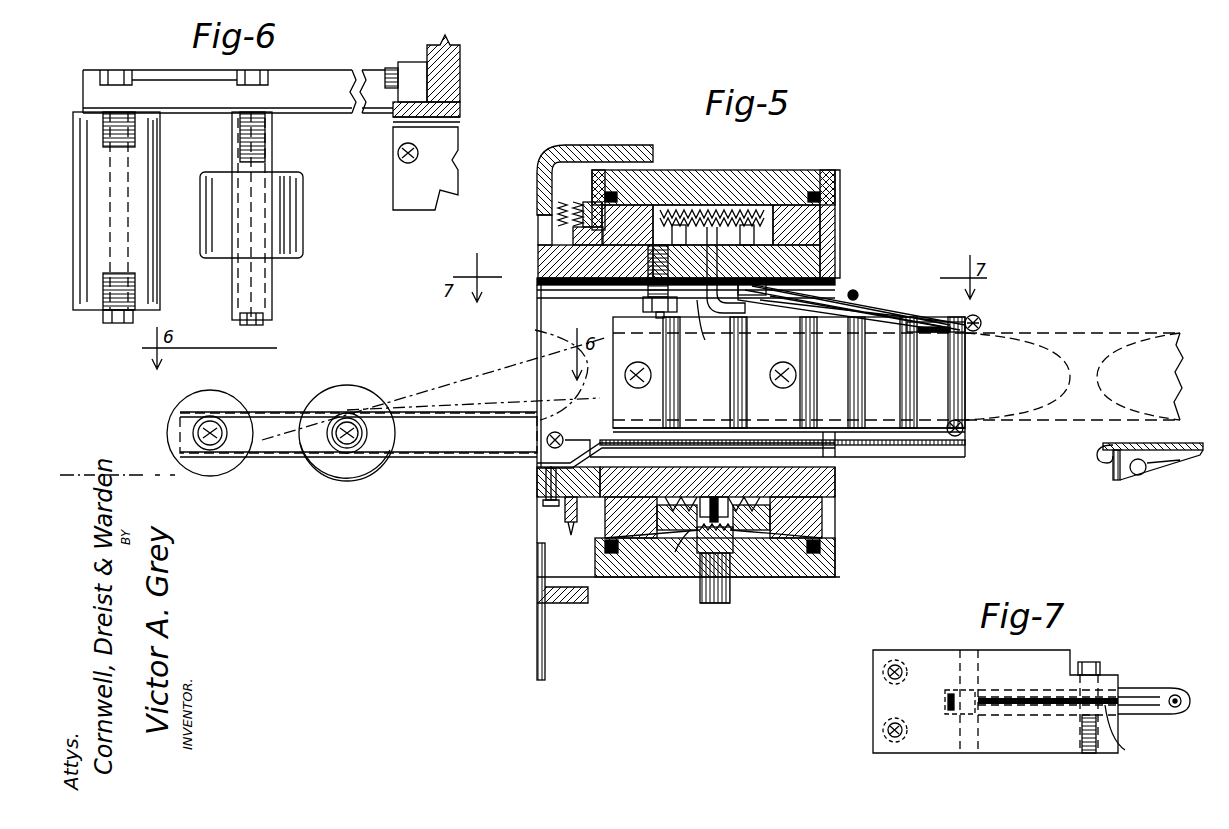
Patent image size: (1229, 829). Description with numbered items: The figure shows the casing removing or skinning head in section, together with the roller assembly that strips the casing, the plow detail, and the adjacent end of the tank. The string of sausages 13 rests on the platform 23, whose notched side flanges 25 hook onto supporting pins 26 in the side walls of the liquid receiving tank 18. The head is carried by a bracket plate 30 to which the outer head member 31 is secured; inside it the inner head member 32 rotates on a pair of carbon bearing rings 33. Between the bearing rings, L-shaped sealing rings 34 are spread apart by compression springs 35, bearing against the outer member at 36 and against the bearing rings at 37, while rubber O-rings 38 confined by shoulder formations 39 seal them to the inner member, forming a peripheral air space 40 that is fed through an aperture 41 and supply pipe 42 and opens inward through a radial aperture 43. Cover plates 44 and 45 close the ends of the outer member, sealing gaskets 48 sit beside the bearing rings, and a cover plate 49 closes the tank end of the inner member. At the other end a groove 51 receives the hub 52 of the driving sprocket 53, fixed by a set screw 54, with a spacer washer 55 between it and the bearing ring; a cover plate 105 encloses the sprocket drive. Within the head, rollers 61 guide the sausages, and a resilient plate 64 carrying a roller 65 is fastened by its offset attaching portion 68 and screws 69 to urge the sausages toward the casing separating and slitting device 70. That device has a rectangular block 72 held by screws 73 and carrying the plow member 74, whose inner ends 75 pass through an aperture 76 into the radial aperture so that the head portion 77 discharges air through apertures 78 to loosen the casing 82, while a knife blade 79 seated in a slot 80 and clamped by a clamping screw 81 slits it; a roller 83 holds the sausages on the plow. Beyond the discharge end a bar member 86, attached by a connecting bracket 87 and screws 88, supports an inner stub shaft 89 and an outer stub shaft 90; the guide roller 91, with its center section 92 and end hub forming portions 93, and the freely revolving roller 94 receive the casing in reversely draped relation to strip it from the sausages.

In FIG. 5, the string of sausages 13 is at (1100, 355).
In FIG. 5, the liquid receiving tank 18 is at (1115, 475).
In FIG. 5, the platform 23 is at (1170, 445).
In FIG. 5, the notched side flanges 25 is at (1162, 470).
In FIG. 5, the supporting pins 26 is at (1134, 478).
In FIG. 5, the bracket plate 30 is at (838, 572).
In FIG. 5, the outer head member 31 is at (738, 172).
In FIG. 5, the inner head member 32 is at (838, 495).
In FIG. 5, the carbon bearing rings 33 is at (838, 516).
In FIG. 5, the sealing rings 34 is at (660, 548).
In FIG. 5, the compression springs 35 is at (690, 545).
In FIG. 5, the engagement point of sealing ring with outer head member 36 is at (700, 553).
In FIG. 5, the engagement point of sealing ring with bearing ring 37 is at (838, 530).
In FIG. 5, the rubber O-rings 38 is at (706, 497).
In FIG. 5, the shoulder formations 39 is at (678, 510).
In FIG. 5, the peripheral air space 40 is at (721, 502).
In FIG. 5, the aperture 41 is at (712, 575).
In FIG. 5, the supply pipe 42 is at (712, 603).
In FIG. 5, the radial aperture 43 is at (752, 287).
In FIG. 5, the cover plate 44 is at (840, 195).
In FIG. 5, the cover plate 45 is at (592, 187).
In FIG. 5, the sealing gaskets 48 is at (612, 192).
In FIG. 5, the cover plate 49 is at (836, 243).
In FIG. 5, the groove 51 is at (545, 270).
In FIG. 5, the hub 52 is at (575, 246).
In FIG. 5, the driving sprocket 53 is at (568, 518).
In FIG. 6, the driving sprocket 53 is at (445, 60).
In FIG. 5, the set screw 54 is at (545, 490).
In FIG. 5, the spacer washer 55 is at (573, 232).
In FIG. 5, the rollers 61 is at (903, 368).
In FIG. 5, the resilient plate 64 is at (912, 452).
In FIG. 5, the roller 65 is at (963, 430).
In FIG. 5, the offset attaching portion 68 is at (594, 445).
In FIG. 5, the screws 69 is at (547, 438).
In FIG. 5, the casing separating and slitting device 70 is at (860, 305).
In FIG. 5, the rectangular block 72 is at (657, 312).
In FIG. 7, the rectangular block 72 is at (873, 661).
In FIG. 5, the screws 73 is at (645, 313).
In FIG. 7, the screws 73 is at (885, 722).
In FIG. 5, the plow member 74 is at (935, 316).
In FIG. 7, the plow member 74 is at (1148, 678).
In FIG. 5, the inner ends 75 is at (735, 300).
In FIG. 5, the aperture 76 is at (697, 325).
In FIG. 7, the head portion 77 is at (1185, 690).
In FIG. 7, the apertures 78 is at (1178, 710).
In FIG. 5, the knife blade 79 is at (866, 316).
In FIG. 7, the knife blade 79 is at (1125, 750).
In FIG. 5, the slot 80 is at (853, 290).
In FIG. 7, the slot 80 is at (1005, 698).
In FIG. 5, the clamping screw 81 is at (858, 300).
In FIG. 7, the clamping screw 81 is at (1088, 662).
In FIG. 5, the casing 82 is at (482, 388).
In FIG. 5, the roller 83 is at (981, 323).
In FIG. 5, the bar member 86 is at (400, 458).
In FIG. 6, the bar member 86 is at (172, 72).
In FIG. 6, the connecting bracket 87 is at (412, 68).
In FIG. 6, the screws 88 is at (388, 70).
In FIG. 6, the inner stub shaft 89 is at (238, 146).
In FIG. 6, the outer stub shaft 90 is at (135, 165).
In FIG. 5, the guide roller 91 is at (342, 475).
In FIG. 6, the guide roller 91 is at (305, 235).
In FIG. 6, the center section 92 is at (304, 194).
In FIG. 6, the end hub forming portions 93 is at (273, 157).
In FIG. 5, the roller 94 is at (215, 465).
In FIG. 6, the roller 94 is at (162, 279).
In FIG. 5, the cover plate 105 is at (537, 593).